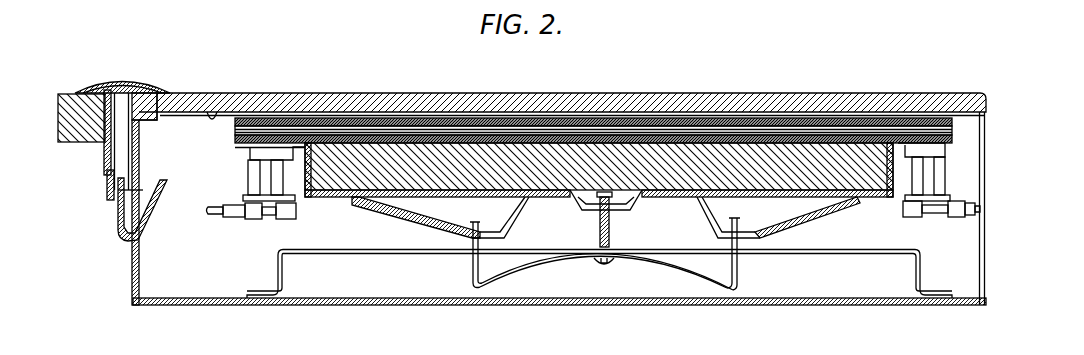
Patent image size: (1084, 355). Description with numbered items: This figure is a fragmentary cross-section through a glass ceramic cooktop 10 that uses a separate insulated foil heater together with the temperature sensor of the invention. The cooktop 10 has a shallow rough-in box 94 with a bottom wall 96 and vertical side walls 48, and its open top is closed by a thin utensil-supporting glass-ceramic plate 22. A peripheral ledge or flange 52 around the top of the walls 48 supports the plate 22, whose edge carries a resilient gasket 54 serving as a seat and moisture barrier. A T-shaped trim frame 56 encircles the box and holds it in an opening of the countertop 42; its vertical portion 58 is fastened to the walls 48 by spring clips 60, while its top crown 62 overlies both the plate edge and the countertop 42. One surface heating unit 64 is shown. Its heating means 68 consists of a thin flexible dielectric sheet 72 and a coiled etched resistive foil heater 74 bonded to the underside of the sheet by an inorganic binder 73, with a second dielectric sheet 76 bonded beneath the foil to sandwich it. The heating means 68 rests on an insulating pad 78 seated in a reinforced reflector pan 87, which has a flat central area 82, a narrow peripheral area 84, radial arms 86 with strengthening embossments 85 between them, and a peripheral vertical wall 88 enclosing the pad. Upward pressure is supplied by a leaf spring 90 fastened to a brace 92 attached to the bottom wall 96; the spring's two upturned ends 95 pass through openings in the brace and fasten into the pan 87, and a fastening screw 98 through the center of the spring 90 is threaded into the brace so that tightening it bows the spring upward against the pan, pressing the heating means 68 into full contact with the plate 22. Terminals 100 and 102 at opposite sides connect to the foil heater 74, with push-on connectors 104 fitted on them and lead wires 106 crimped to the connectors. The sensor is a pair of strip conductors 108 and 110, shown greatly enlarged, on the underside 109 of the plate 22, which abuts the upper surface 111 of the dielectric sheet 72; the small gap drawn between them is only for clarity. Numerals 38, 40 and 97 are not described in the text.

The cooktop 10 is at (562, 88).
The glass-ceramic plate 22 is at (590, 108).
The upper surface 38 is at (549, 118).
The heating area 40 is at (651, 118).
The countertop 42 is at (76, 93).
The vertical side walls 48 is at (139, 166).
The peripheral ledge or flange 52 is at (152, 124).
The resilient gasket 54 is at (148, 81).
The trim frame 56 is at (102, 130).
The vertical portion 58 is at (105, 194).
The spring clips 60 is at (152, 224).
The top crown 62 is at (99, 81).
The surface heating unit 64 is at (787, 226).
The heating means 68 is at (964, 112).
The dielectric sheet 72 is at (795, 120).
The inorganic binder 73 is at (234, 128).
The etched resistive foil heater 74 is at (262, 135).
The second dielectric sheet 76 is at (246, 150).
The insulating pad 78 is at (342, 176).
The flat central area 82 is at (556, 197).
The narrow peripheral area 84 is at (323, 198).
The depressions or embossments 85 is at (420, 228).
The radial arms 86 is at (418, 192).
The reflector pan 87 is at (666, 198).
The vertical wall 88 is at (950, 150).
The leaf spring 90 is at (706, 288).
The brace 92 is at (906, 257).
The rough-in box 94 is at (206, 306).
The upturned ends 95 is at (470, 264).
The bottom wall 96 is at (422, 306).
The hook 97 is at (740, 258).
The fastening screw 98 is at (600, 236).
The terminal 100 is at (948, 160).
The terminal 102 is at (246, 162).
The push-on connectors 104 is at (290, 207).
The lead wires 106 is at (216, 216).
The strip conductor 108 is at (565, 118).
The underside 109 is at (213, 112).
The strip conductor 110 is at (665, 120).
The upper surface 111 is at (247, 120).